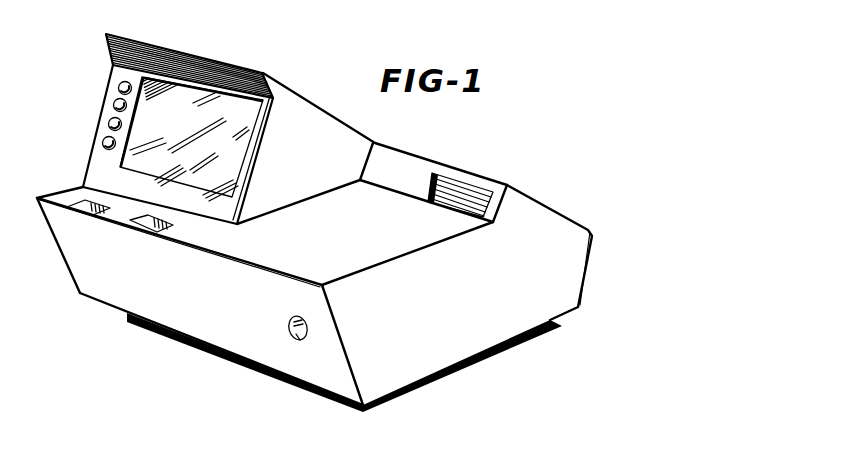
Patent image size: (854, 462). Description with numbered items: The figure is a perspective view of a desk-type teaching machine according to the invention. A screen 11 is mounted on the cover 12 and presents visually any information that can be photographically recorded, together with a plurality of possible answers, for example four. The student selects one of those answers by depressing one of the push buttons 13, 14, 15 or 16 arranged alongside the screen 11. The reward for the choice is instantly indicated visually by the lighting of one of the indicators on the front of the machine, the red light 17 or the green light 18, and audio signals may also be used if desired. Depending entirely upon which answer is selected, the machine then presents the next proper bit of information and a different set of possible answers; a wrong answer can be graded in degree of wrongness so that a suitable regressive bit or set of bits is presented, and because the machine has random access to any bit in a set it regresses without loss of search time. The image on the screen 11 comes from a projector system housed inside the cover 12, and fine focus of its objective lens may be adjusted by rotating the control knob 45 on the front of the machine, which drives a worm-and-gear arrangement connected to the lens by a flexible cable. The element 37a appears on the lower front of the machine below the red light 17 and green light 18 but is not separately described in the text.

The screen 11 is at (183, 129).
The cover 12 is at (150, 50).
The push button 13 is at (119, 84).
The push button 14 is at (114, 103).
The push button 15 is at (109, 123).
The push button 16 is at (103, 143).
The red light 17 is at (80, 198).
The green light 18 is at (133, 230).
The base strip 37a is at (200, 322).
The control knob 45 is at (290, 336).